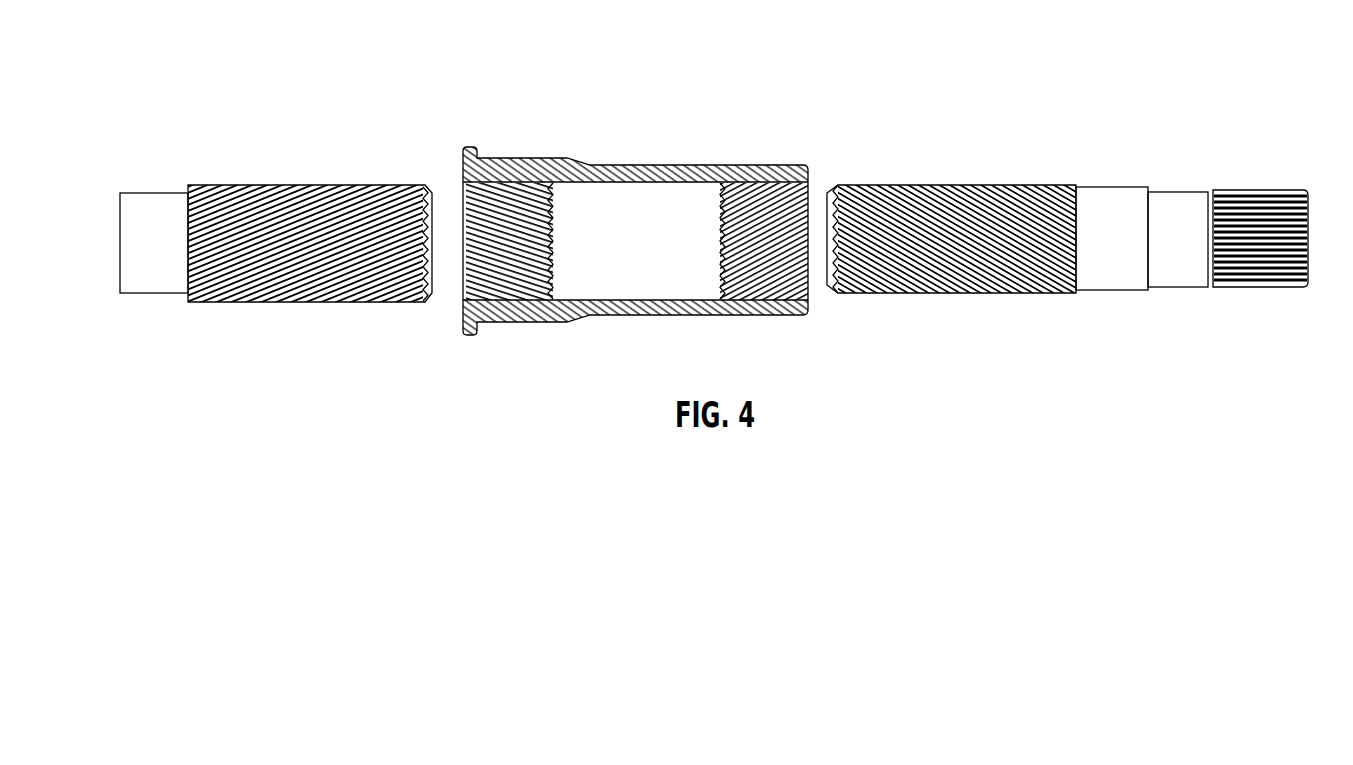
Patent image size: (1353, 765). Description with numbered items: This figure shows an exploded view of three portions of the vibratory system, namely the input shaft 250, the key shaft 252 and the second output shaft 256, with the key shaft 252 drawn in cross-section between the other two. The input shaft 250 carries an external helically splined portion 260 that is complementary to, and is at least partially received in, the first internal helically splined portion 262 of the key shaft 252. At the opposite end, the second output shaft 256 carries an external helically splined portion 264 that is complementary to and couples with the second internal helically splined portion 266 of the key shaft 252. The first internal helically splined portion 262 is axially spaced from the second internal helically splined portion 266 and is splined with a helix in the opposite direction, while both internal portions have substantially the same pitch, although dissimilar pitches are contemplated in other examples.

The input shaft 250 is at (171, 92).
The key shaft 252 is at (601, 226).
The second output shaft 256 is at (1067, 215).
The external helically splined portion 260 is at (336, 198).
The first internal helically splined portion 262 is at (510, 256).
The external helically splined portion 264 is at (931, 207).
The second internal helically splined portion 266 is at (774, 284).